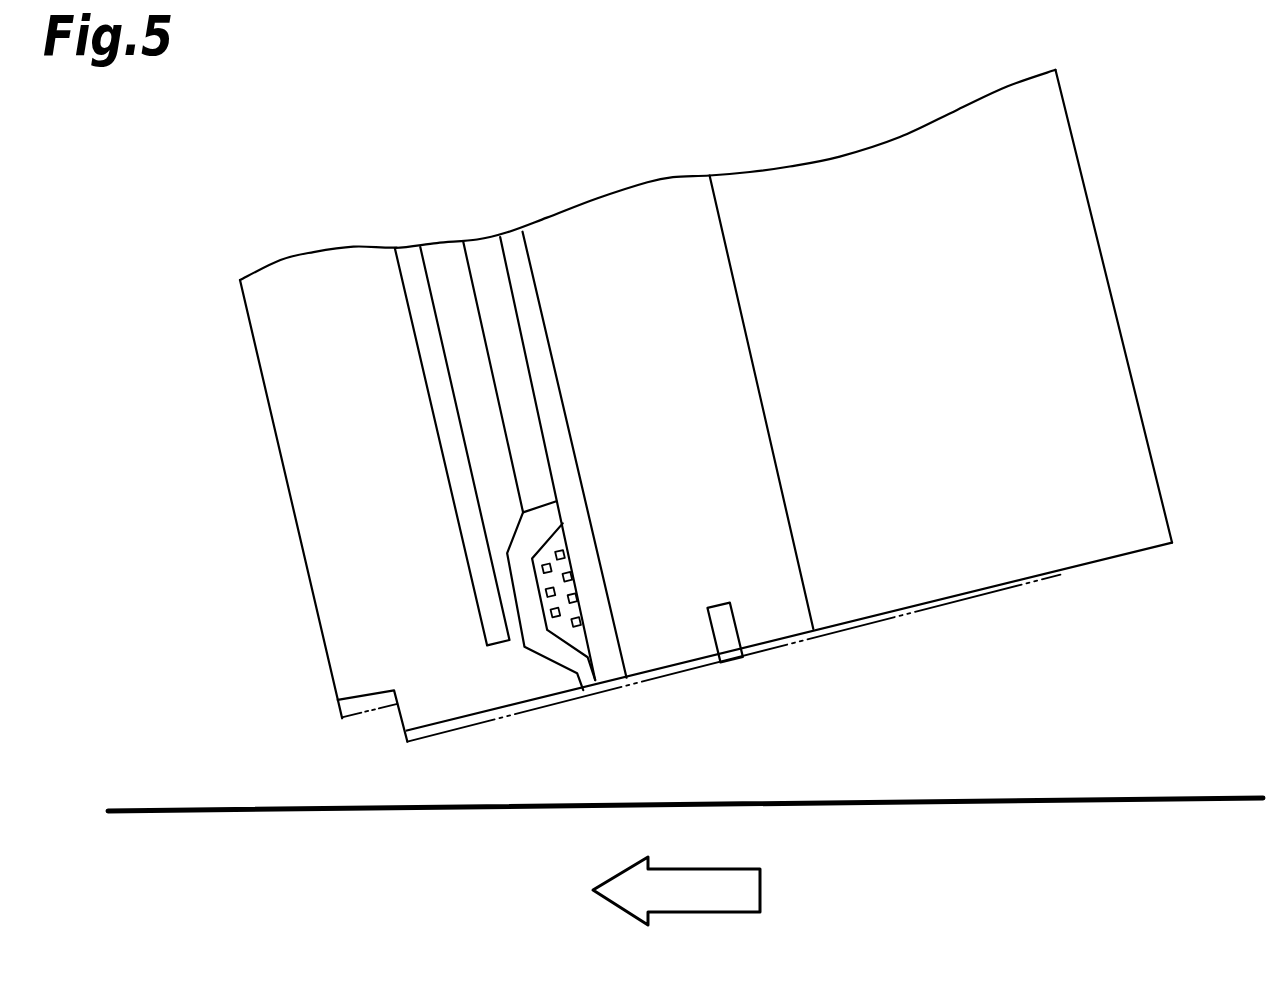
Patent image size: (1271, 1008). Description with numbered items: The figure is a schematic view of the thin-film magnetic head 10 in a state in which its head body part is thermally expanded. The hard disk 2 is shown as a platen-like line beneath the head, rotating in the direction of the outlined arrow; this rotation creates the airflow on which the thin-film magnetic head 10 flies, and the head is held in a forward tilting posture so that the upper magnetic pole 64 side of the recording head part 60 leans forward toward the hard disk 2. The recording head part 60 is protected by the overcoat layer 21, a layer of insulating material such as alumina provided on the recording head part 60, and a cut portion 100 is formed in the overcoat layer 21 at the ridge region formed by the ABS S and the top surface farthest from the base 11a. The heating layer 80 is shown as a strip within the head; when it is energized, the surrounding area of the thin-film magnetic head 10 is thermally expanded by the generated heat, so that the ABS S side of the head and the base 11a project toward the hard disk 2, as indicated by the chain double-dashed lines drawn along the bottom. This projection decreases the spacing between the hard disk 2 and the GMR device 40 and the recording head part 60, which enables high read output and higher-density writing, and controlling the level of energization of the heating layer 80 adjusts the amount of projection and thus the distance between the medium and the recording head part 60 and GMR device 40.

The hard disk 2 is at (1088, 797).
The thin-film magnetic head 10 is at (280, 552).
The base 11a is at (1013, 583).
The overcoat layer 21 is at (320, 288).
The GMR device 40 is at (722, 624).
The recording head part 60 is at (600, 528).
The upper magnetic pole 64 is at (547, 645).
The heating layer 80 is at (410, 262).
The cut portion 100 is at (368, 695).
The ABS S is at (478, 718).